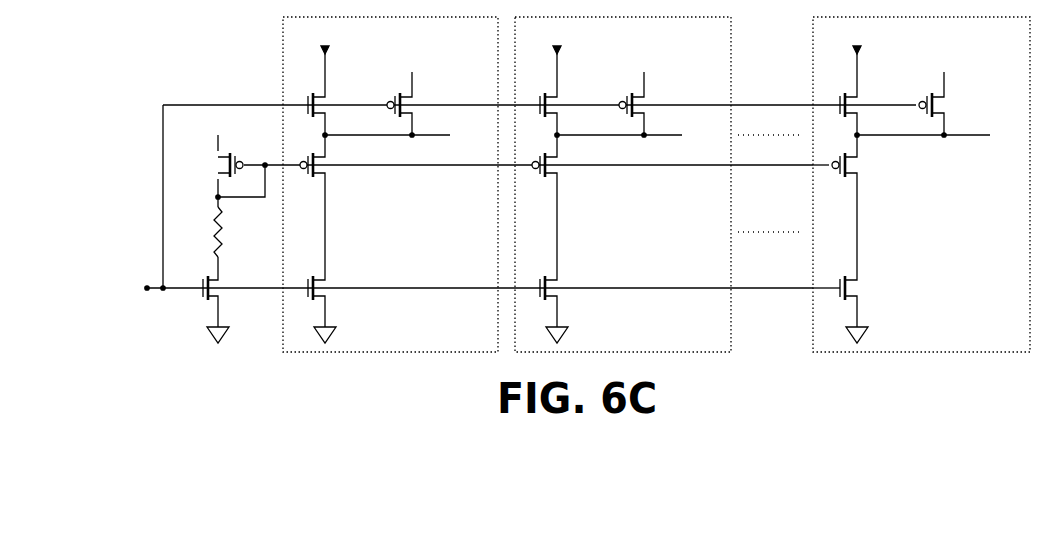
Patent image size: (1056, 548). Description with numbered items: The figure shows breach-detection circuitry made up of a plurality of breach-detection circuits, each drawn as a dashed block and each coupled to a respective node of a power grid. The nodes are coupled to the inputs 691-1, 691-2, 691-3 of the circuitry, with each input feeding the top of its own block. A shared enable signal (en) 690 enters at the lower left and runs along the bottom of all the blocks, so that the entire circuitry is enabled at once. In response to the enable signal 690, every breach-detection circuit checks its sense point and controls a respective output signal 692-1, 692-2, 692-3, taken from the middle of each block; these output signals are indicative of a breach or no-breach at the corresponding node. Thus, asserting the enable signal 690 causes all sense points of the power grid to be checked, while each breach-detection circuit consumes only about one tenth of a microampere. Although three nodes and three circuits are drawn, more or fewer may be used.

The enable signal 690 is at (121, 290).
The input 691-1 is at (399, 178).
The input 691-2 is at (655, 178).
The input 691-3 is at (921, 176).
The output signal 692-1 is at (478, 137).
The output signal 692-2 is at (693, 137).
The output signal 692-3 is at (1005, 137).